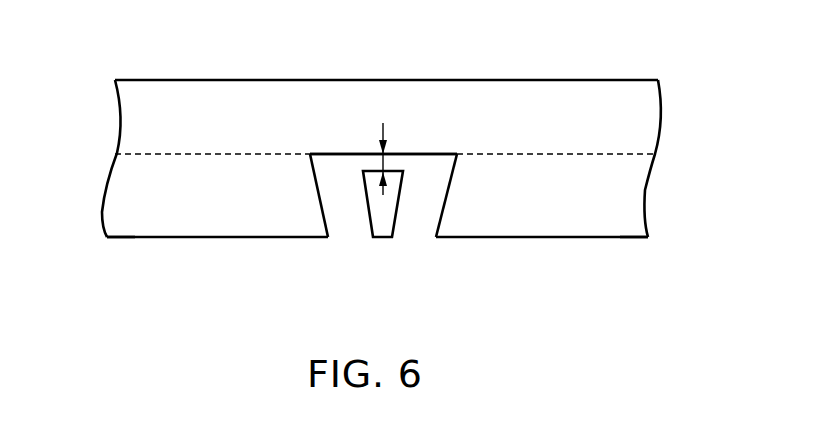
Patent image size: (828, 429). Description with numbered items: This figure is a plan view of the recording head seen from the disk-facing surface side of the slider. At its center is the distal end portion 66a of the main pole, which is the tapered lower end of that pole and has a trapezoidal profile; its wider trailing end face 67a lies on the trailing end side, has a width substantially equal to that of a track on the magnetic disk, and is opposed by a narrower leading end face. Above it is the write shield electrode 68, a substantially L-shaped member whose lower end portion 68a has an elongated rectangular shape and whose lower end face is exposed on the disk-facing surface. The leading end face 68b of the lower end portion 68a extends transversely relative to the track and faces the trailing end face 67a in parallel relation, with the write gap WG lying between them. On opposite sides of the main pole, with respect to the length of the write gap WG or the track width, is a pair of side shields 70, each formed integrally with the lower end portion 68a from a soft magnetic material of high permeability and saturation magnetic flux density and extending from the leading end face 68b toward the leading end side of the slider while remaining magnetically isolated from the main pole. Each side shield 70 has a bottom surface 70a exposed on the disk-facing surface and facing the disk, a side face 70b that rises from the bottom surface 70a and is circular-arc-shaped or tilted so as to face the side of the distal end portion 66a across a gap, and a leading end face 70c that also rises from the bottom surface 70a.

The distal end portion 66a is at (383, 240).
The trailing end face 67a is at (373, 170).
The write shield electrode 68 is at (374, 161).
The lower end portion 68a is at (199, 92).
The leading end face 68b is at (434, 160).
The side shield 70 is at (203, 228).
The bottom surface 70a is at (108, 210).
The side face 70b is at (322, 204).
The leading end face 70c is at (135, 239).
The write gap WG is at (376, 166).